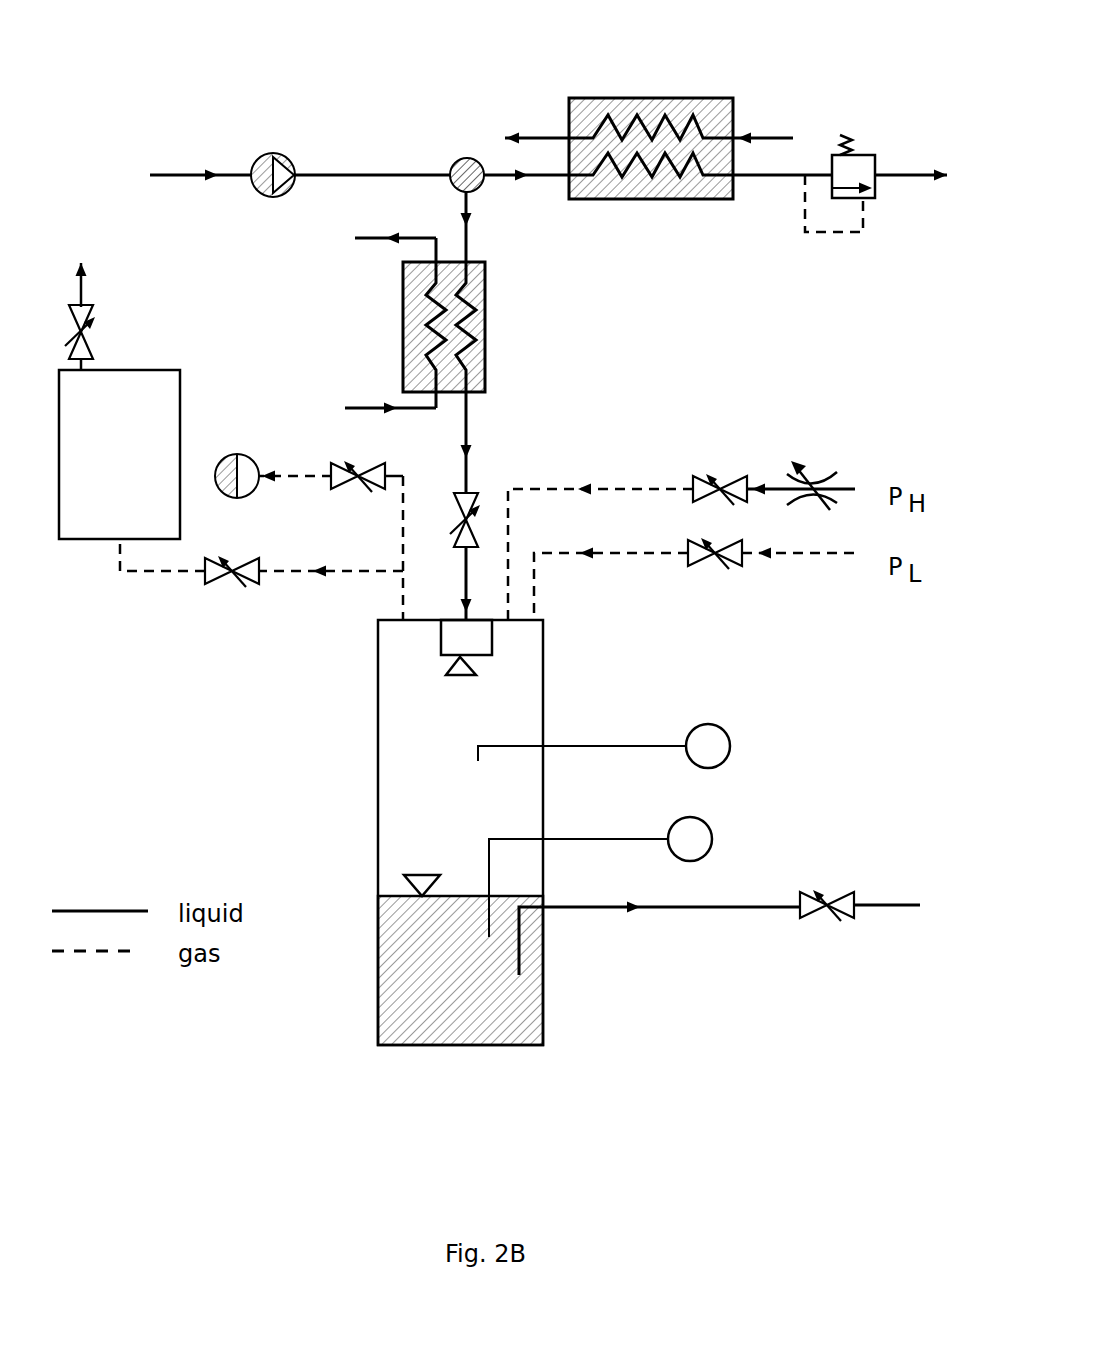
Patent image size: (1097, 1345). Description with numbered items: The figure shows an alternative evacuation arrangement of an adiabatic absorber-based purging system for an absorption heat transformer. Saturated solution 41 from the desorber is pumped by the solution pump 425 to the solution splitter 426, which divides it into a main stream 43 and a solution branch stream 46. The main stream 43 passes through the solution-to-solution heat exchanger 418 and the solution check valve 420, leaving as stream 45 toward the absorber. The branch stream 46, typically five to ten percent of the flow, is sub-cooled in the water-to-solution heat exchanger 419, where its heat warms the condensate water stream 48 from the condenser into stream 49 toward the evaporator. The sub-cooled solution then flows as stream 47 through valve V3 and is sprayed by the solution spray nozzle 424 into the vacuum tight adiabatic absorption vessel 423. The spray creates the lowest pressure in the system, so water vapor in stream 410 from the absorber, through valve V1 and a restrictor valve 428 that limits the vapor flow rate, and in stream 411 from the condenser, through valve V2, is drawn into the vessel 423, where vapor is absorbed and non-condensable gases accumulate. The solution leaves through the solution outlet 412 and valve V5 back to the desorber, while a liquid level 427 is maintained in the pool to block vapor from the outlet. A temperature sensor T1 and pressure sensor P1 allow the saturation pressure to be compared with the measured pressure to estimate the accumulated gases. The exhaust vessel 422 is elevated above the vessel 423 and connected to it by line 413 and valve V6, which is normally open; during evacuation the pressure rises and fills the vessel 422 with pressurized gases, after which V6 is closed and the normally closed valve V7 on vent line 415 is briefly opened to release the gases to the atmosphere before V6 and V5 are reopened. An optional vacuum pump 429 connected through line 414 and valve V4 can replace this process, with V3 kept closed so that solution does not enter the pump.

The saturated solution 41 is at (200, 192).
The solution pump 425 is at (265, 153).
The solution splitter 426 is at (462, 158).
The main stream 43 is at (526, 192).
The solution-to-solution heat exchanger 418 is at (650, 98).
The solution check valve 420 is at (875, 155).
The stream to absorber 45 is at (911, 197).
The solution branch stream 46 is at (482, 227).
The water-to-solution heat exchanger 419 is at (486, 325).
The condensate water stream to evaporator 49 is at (394, 257).
The condensate water stream 48 is at (390, 395).
The sub-cooled solution stream 47 is at (492, 442).
The valve V3 is at (449, 520).
The water vapor stream from absorber 410 is at (600, 535).
The valve V1 is at (720, 466).
The restrictor valve 428 is at (815, 482).
The water vapor stream from condenser 411 is at (611, 584).
The valve V2 is at (716, 579).
The vacuum pump line 414 is at (331, 462).
The valve V4 is at (358, 498).
The vacuum pump 429 is at (240, 454).
The line 413 is at (261, 558).
The valve V6 is at (232, 599).
The exhaust vessel 422 is at (180, 400).
The valve V7 is at (106, 337).
The vent exit line 415 is at (78, 272).
The adiabatic absorption vessel 423 is at (543, 965).
The solution spray nozzle 424 is at (492, 635).
The pressure sensor P1 is at (604, 746).
The temperature sensor T1 is at (600, 877).
The liquid level 427 is at (420, 875).
The solution outlet 412 is at (659, 939).
The valve V5 is at (860, 928).